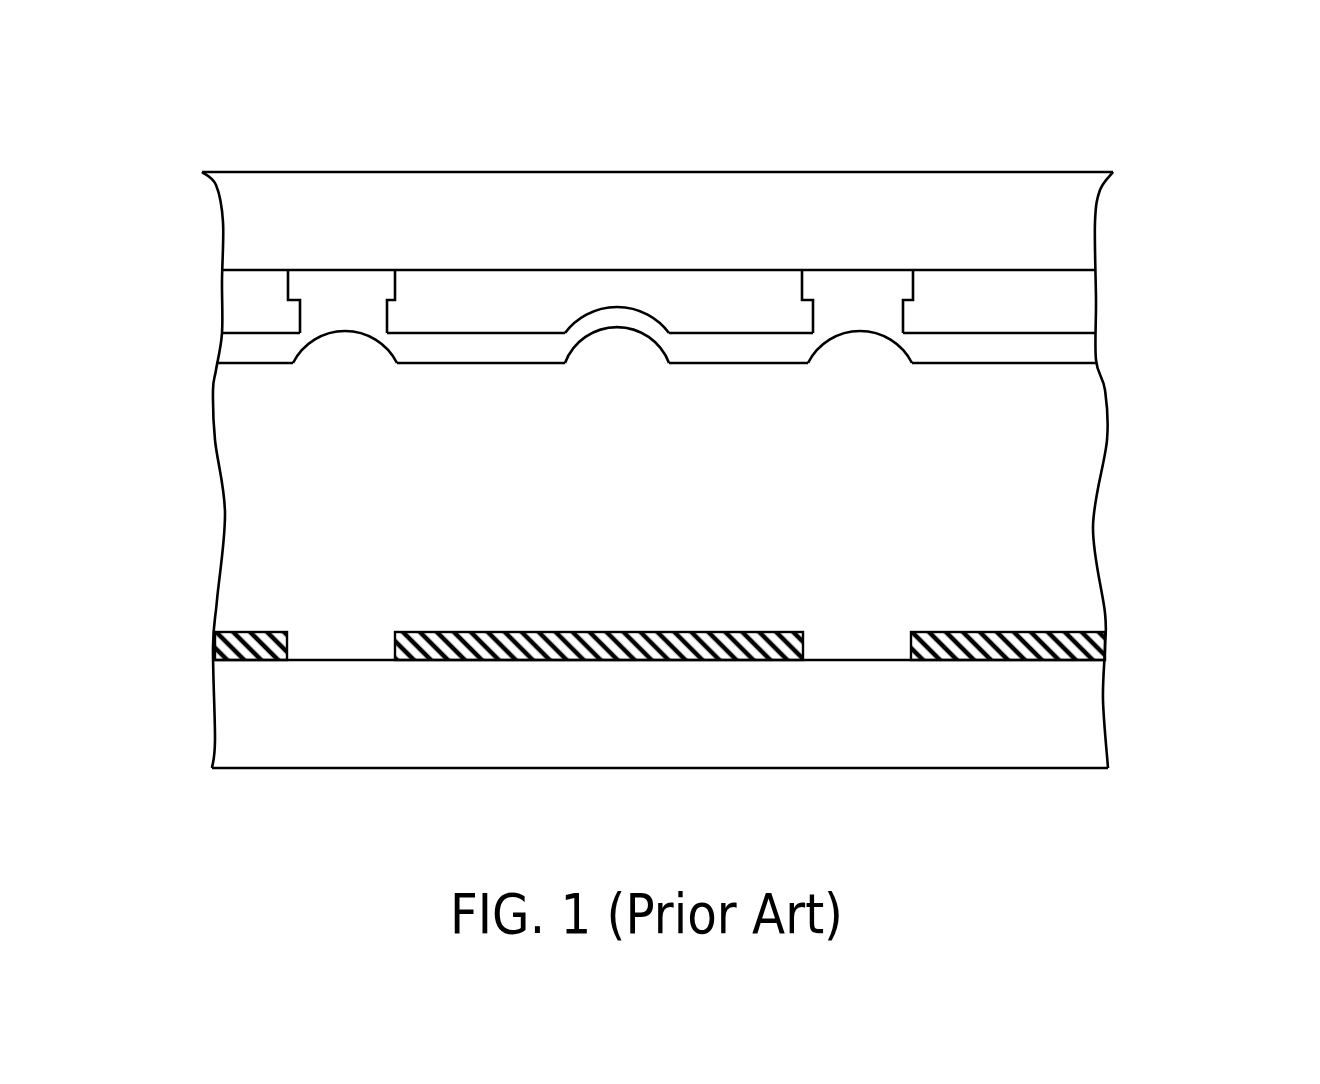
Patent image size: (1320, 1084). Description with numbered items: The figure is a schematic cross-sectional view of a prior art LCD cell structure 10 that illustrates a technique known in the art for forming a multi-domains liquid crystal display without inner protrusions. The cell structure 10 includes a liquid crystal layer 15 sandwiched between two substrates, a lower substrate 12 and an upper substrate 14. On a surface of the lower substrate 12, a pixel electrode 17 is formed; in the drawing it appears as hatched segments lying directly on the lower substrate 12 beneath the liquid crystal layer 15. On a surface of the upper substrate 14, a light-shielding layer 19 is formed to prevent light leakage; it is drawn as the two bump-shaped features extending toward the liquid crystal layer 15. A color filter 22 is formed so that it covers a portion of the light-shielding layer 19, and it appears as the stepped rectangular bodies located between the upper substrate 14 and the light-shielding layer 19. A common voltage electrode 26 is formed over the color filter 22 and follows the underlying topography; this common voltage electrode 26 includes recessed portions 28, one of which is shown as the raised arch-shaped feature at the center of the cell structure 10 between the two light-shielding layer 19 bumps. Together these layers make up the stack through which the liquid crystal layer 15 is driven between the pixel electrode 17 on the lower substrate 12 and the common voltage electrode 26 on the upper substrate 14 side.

The cell structure 10 is at (1184, 105).
The lower substrate 12 is at (233, 723).
The upper substrate 14 is at (235, 223).
The liquid crystal layer 15 is at (248, 469).
The pixel electrode 17 is at (609, 632).
The light-shielding layer 19 is at (343, 282).
The color filter 22 is at (240, 305).
The common voltage electrode 26 is at (245, 345).
The recessed portions 28 is at (620, 360).